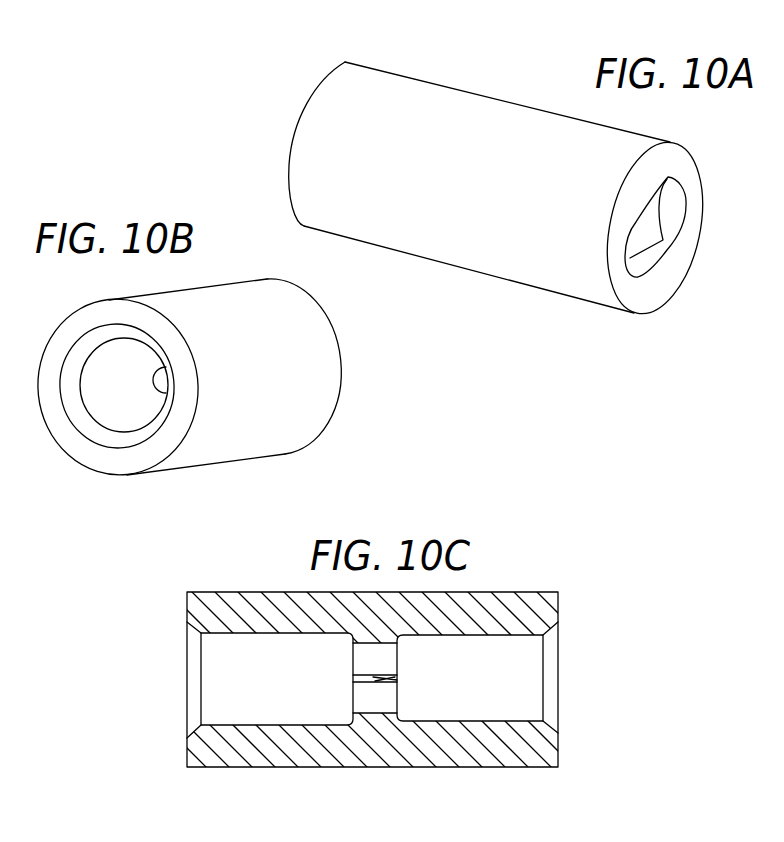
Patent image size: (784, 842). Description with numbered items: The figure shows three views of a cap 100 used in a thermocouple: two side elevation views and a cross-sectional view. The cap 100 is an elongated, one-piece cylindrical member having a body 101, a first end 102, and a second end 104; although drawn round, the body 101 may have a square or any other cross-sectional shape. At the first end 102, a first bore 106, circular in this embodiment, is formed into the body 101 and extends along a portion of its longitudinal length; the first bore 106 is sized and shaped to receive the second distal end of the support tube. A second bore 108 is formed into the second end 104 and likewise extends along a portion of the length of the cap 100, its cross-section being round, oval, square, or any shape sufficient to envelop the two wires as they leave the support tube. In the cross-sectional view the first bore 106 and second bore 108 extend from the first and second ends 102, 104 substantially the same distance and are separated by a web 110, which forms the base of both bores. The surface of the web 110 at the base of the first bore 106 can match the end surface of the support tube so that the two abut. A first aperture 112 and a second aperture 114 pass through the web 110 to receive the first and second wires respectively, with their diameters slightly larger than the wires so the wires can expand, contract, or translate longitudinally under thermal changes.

In FIG. 10A, the cap 100 is at (515, 186).
In FIG. 10B, the cap 100 is at (218, 372).
In FIG. 10C, the cap 100 is at (371, 672).
In FIG. 10A, the body 101 is at (515, 262).
In FIG. 10B, the body 101 is at (199, 295).
In FIG. 10C, the body 101 is at (365, 757).
In FIG. 10A, the first end 102 is at (321, 79).
In FIG. 10B, the first end 102 is at (47, 375).
In FIG. 10C, the first end 102 is at (184, 617).
In FIG. 10A, the second end 104 is at (648, 293).
In FIG. 10B, the second end 104 is at (332, 412).
In FIG. 10C, the second end 104 is at (556, 611).
In FIG. 10B, the first bore 106 is at (100, 416).
In FIG. 10C, the first bore 106 is at (245, 717).
In FIG. 10A, the second bore 108 is at (665, 197).
In FIG. 10B, the second bore 108 is at (159, 380).
In FIG. 10C, the second bore 108 is at (498, 712).
In FIG. 10C, the web 110 is at (388, 678).
In FIG. 10C, the first aperture 112 is at (358, 665).
In FIG. 10C, the second aperture 114 is at (360, 702).